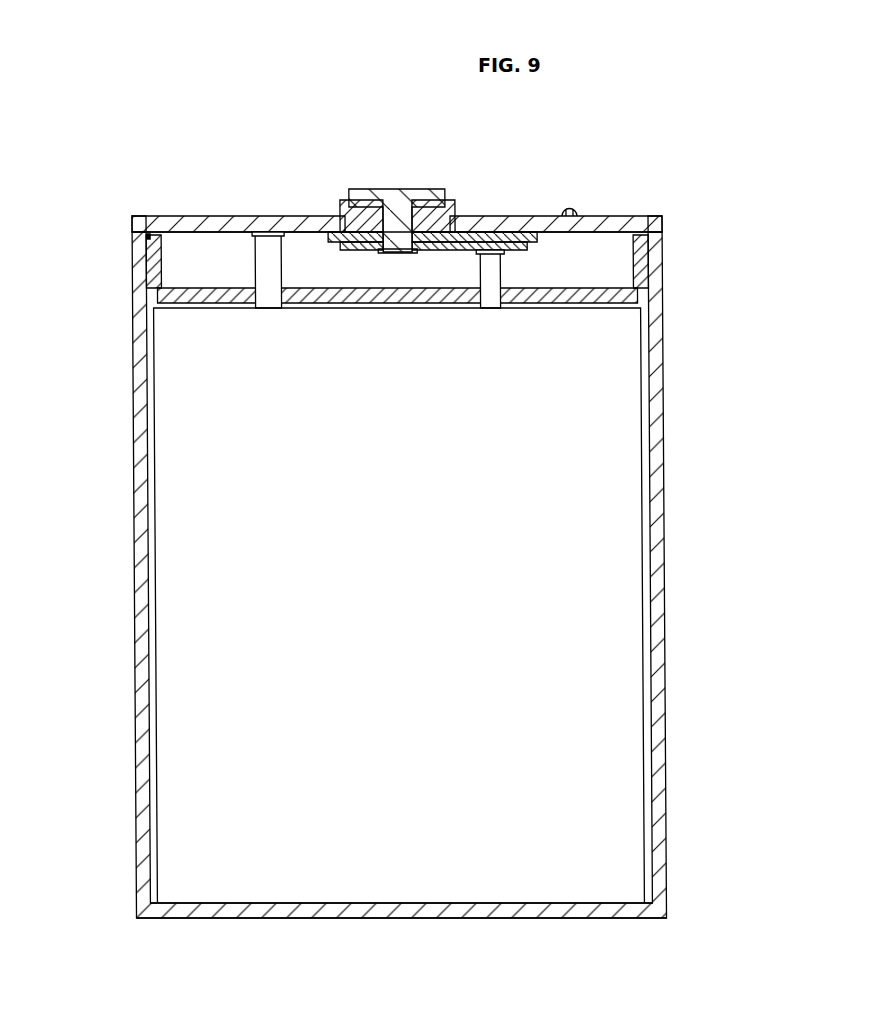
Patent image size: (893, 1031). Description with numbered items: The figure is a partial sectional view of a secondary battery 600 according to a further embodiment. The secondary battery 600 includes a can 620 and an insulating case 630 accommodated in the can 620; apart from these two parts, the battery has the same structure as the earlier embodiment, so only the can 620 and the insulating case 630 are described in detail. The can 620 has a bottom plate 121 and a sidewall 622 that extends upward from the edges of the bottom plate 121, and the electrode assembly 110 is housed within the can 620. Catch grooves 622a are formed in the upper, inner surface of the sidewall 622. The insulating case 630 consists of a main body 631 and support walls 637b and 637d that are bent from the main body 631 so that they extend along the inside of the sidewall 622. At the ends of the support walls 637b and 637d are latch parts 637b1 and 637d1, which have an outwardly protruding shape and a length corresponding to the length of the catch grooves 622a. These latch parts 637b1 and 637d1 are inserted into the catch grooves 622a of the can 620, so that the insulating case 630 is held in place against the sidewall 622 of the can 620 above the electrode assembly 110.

The secondary battery 600 is at (70, 142).
The can 620 is at (403, 606).
The sidewall 622 is at (140, 378).
The catch grooves 622a is at (148, 239).
The bottom plate 121 is at (262, 910).
The electrode assembly 110 is at (175, 700).
The insulating case 630 is at (183, 298).
The main body 631 is at (608, 302).
The support wall 637d is at (156, 271).
The support wall 637b is at (640, 273).
The latch part 637d1 is at (138, 216).
The latch part 637b1 is at (670, 198).